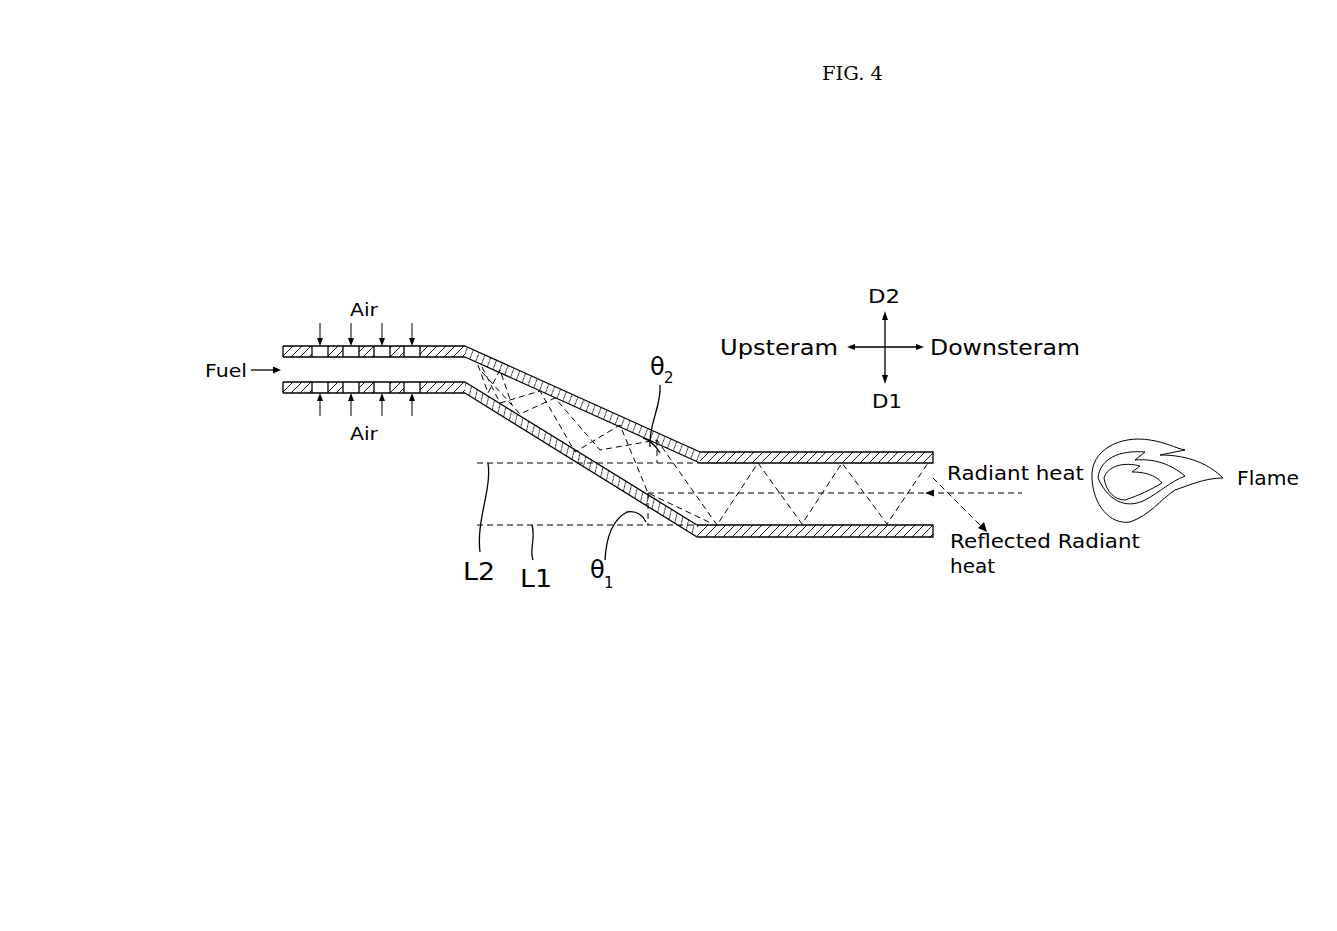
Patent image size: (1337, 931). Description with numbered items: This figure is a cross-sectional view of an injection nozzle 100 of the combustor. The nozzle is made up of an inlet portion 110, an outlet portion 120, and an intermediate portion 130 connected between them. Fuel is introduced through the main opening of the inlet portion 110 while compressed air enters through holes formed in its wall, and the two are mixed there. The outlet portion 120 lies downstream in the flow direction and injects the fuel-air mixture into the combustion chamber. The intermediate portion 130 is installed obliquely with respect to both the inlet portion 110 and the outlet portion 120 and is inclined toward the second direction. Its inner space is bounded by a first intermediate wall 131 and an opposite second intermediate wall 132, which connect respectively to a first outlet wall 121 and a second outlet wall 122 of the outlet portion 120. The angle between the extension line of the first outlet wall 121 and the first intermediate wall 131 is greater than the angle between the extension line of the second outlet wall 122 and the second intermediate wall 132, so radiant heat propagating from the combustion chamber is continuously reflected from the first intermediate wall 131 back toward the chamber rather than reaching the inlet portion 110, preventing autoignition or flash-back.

The injection nozzle 100 is at (266, 245).
The inlet portion 110 is at (293, 412).
The outlet portion 120 is at (815, 514).
The first outlet wall 121 is at (855, 537).
The second outlet wall 122 is at (777, 452).
The intermediate portion 130 is at (556, 400).
The first intermediate wall 131 is at (467, 394).
The second intermediate wall 132 is at (568, 392).